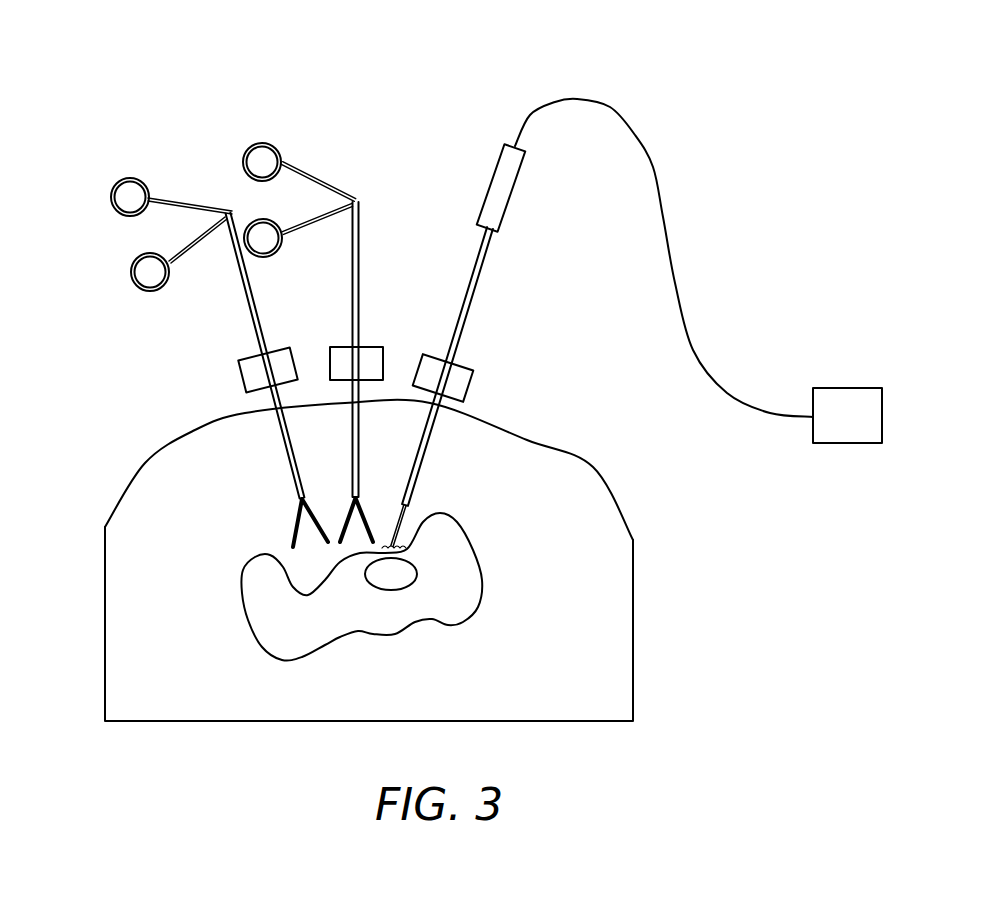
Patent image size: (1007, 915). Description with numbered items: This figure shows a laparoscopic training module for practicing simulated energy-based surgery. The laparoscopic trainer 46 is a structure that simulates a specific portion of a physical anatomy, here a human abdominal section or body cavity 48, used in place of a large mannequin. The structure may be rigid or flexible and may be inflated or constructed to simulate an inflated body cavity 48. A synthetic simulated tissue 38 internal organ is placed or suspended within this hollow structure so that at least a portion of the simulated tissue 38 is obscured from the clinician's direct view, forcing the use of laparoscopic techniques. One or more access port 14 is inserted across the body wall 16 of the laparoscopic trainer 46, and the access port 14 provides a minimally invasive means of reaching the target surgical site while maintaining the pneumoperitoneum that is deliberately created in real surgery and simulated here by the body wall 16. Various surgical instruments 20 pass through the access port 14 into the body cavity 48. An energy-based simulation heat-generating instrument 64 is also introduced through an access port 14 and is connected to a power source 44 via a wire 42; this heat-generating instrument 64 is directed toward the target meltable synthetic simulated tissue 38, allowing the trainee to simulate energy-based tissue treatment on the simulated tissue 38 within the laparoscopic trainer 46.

The access port 14 is at (332, 350).
The body wall 16 is at (495, 410).
The surgical instrument 20 is at (185, 205).
The simulated tissue 38 is at (257, 645).
The wire 42 is at (675, 282).
The power source 44 is at (847, 443).
The laparoscopic trainer 46 is at (633, 633).
The body cavity 48 is at (513, 480).
The energy-based simulation heat-generating instrument 64 is at (510, 208).